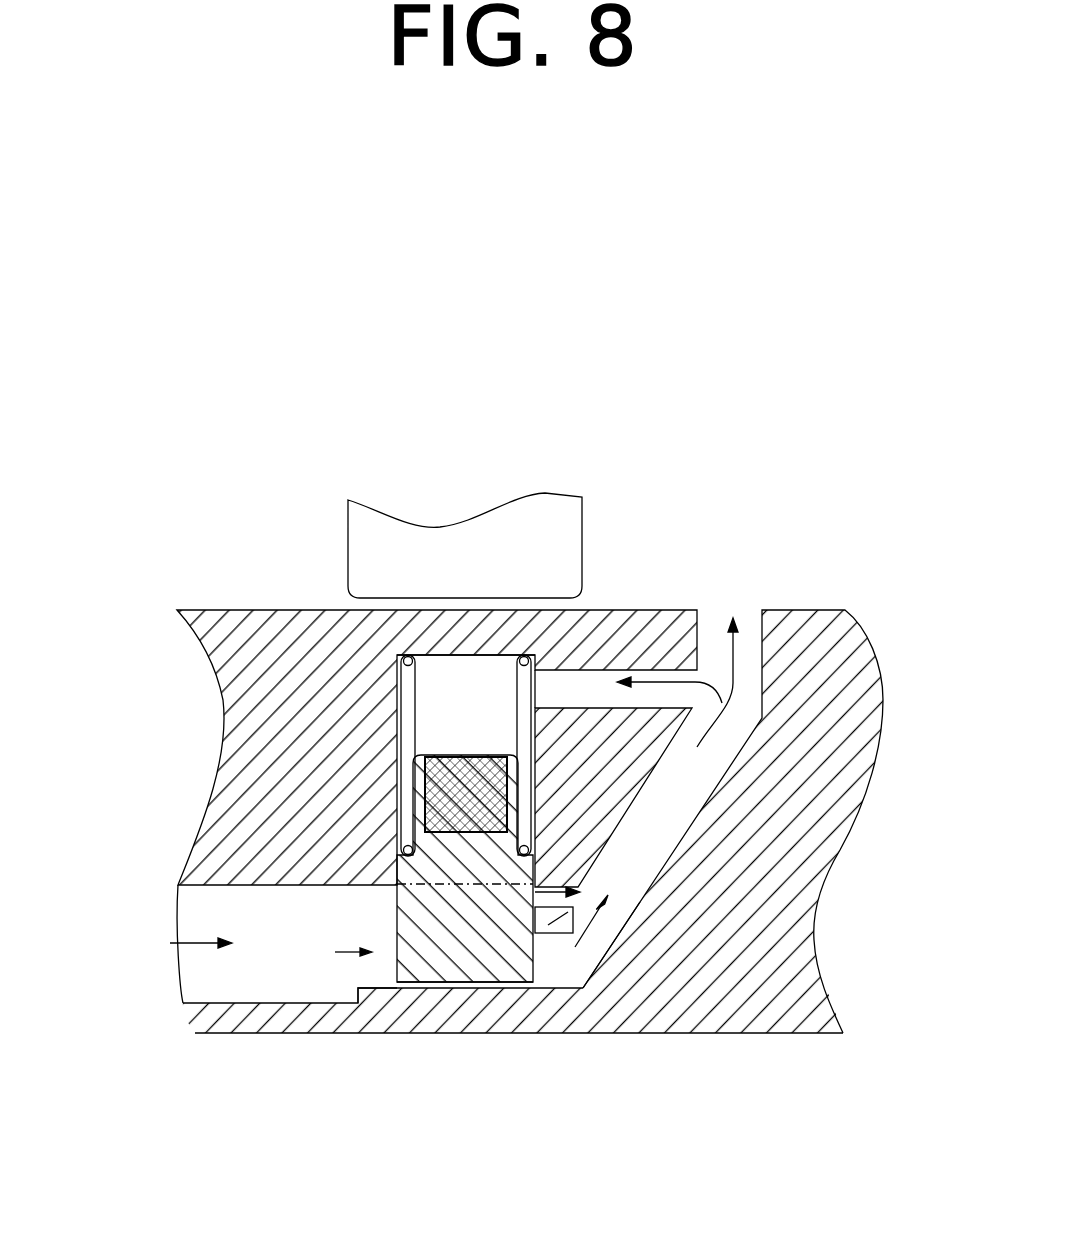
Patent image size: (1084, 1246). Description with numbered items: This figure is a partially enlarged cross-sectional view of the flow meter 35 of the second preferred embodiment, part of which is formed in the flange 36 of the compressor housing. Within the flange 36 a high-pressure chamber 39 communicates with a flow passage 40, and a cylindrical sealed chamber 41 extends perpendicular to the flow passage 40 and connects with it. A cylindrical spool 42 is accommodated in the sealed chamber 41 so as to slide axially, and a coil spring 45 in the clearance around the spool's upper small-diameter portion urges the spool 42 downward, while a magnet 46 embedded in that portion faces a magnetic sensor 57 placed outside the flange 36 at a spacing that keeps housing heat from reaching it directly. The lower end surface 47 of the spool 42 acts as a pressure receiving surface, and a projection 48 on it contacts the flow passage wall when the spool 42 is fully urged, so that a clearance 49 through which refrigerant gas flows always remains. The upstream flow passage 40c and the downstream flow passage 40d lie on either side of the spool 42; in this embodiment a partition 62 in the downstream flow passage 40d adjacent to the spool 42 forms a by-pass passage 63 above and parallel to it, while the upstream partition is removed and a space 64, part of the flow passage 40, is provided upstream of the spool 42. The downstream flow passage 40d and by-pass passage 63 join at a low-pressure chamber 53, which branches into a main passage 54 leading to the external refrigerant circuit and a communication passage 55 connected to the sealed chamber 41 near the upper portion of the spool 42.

The flow meter 35 is at (250, 455).
The flange 36 is at (238, 649).
The high-pressure chamber 39 is at (203, 970).
The flow passage 40 is at (367, 973).
The upstream flow passage 40c is at (391, 960).
The downstream flow passage 40d is at (590, 995).
The sealed chamber 41 is at (483, 716).
The spool 42 is at (440, 960).
The coil spring 45 is at (397, 656).
The magnet 46 is at (510, 773).
The lower end surface 47 is at (420, 968).
The projection 48 is at (458, 983).
The clearance 49 is at (510, 985).
The low-pressure chamber 53 is at (708, 757).
The main passage 54 is at (750, 632).
The communication passage 55 is at (658, 673).
The magnetic sensor 57 is at (417, 547).
The partition 62 is at (588, 900).
The by-pass passage 63 is at (548, 933).
The space 64 is at (370, 922).